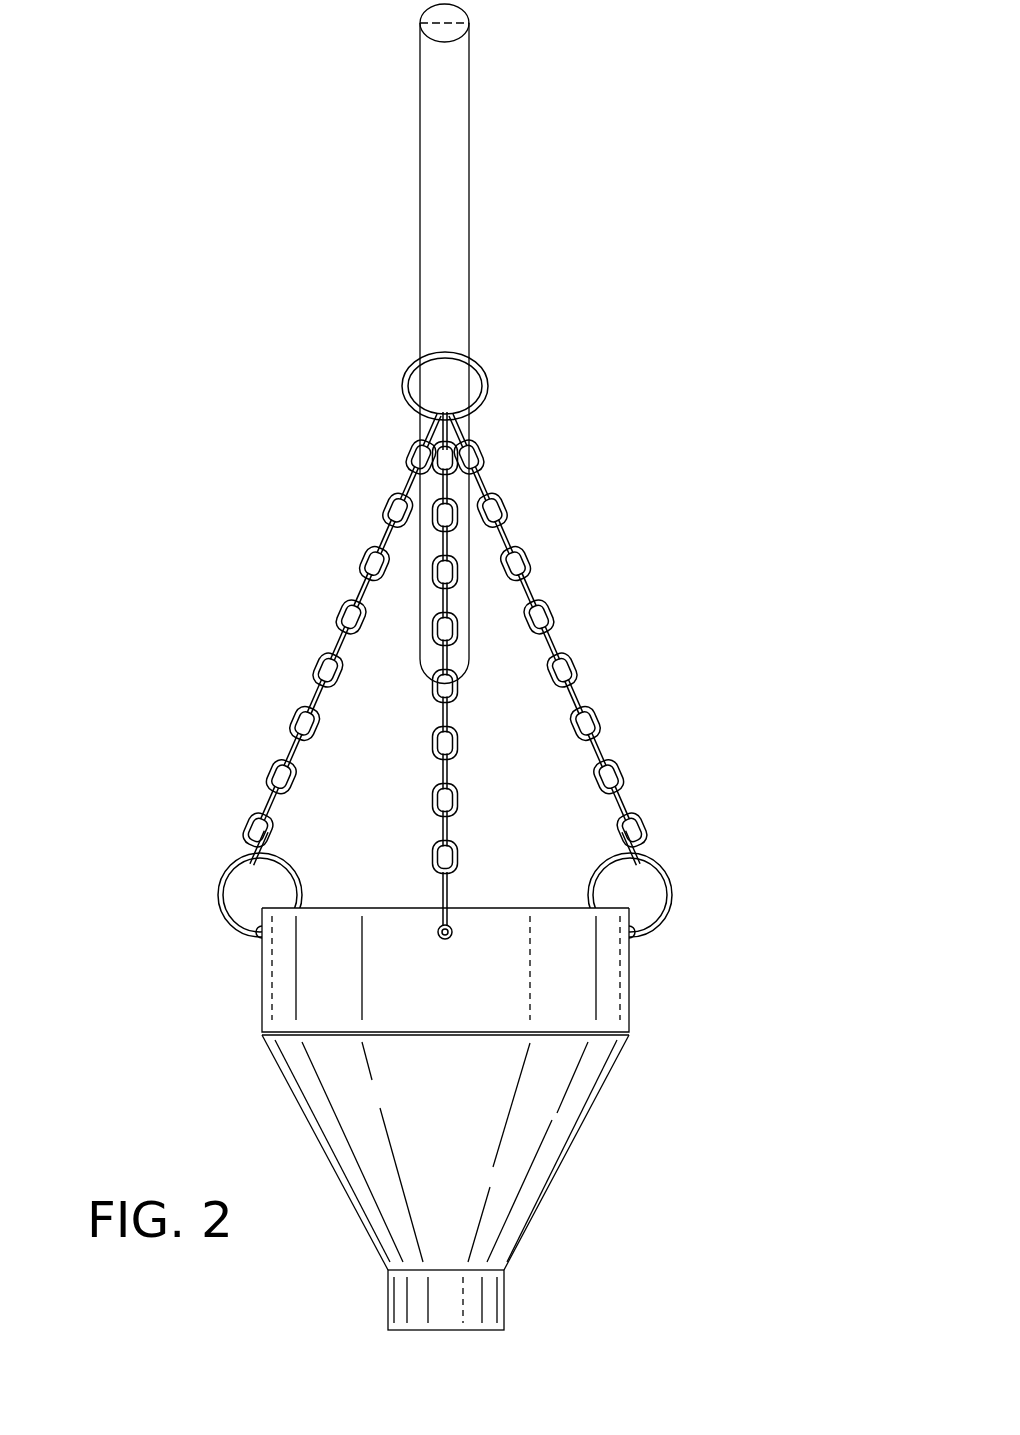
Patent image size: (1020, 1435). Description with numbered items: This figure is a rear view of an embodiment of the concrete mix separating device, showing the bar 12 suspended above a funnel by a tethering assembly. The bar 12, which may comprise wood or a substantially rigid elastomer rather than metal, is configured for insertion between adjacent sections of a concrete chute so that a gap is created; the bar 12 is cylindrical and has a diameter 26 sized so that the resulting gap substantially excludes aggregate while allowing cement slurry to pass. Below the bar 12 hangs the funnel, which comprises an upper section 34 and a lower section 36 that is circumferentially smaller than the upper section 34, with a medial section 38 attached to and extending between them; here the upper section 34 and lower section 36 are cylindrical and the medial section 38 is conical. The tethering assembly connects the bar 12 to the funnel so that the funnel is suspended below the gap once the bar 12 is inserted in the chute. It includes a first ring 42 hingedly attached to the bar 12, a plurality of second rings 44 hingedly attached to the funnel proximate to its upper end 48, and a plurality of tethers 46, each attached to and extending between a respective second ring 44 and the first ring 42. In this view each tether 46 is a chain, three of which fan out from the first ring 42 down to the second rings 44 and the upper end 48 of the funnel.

The bar 12 is at (475, 132).
The diameter 26 is at (463, 39).
The first ring 42 is at (506, 380).
The tether 46 is at (414, 555).
The second ring 44 is at (586, 853).
The upper section 34 is at (305, 978).
The upper end 48 is at (557, 922).
The medial section 38 is at (330, 1095).
The lower section 36 is at (486, 1294).